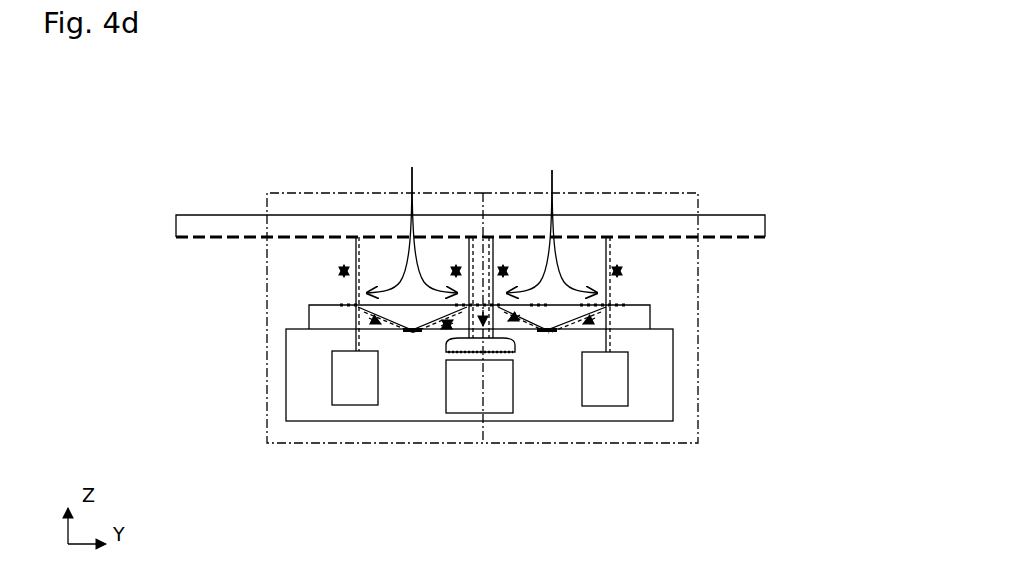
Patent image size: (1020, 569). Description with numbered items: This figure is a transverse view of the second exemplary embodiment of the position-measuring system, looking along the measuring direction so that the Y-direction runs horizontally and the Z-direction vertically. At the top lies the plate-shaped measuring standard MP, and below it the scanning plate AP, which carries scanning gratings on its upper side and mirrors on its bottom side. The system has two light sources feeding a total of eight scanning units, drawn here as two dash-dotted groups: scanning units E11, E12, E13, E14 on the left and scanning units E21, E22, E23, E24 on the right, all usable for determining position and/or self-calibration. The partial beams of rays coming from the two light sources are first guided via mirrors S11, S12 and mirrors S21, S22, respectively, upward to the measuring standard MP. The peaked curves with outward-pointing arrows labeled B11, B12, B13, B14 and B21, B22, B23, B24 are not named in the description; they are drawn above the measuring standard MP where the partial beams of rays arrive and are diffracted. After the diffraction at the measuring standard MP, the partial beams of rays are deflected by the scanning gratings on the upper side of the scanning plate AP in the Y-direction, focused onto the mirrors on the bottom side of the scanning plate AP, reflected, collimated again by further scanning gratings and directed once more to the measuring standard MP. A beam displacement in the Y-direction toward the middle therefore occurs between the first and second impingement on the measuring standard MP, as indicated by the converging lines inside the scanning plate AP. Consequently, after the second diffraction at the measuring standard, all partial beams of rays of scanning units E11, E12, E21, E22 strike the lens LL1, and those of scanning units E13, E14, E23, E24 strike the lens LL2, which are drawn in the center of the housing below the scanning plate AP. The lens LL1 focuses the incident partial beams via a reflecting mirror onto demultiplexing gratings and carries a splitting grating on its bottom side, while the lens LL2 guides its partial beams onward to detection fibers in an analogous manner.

The measuring standard MP is at (731, 229).
The scanning plate AP is at (634, 318).
The light beam B11 is at (365, 215).
The light beam B12 is at (365, 215).
The light beam B13 is at (365, 215).
The light beam B14 is at (365, 215).
The light beam B21 is at (566, 215).
The light beam B22 is at (566, 215).
The light beam B23 is at (566, 215).
The light beam B24 is at (566, 215).
The mirror S11 is at (264, 405).
The mirror S12 is at (316, 384).
The mirror S21 is at (697, 408).
The mirror S22 is at (642, 382).
The scanning unit E11 is at (375, 339).
The scanning unit E12 is at (375, 339).
The scanning unit E13 is at (375, 339).
The scanning unit E14 is at (375, 339).
The scanning unit E21 is at (590, 340).
The scanning unit E22 is at (590, 340).
The scanning unit E23 is at (590, 340).
The scanning unit E24 is at (590, 340).
The lens LL1 is at (443, 432).
The lens LL2 is at (528, 351).